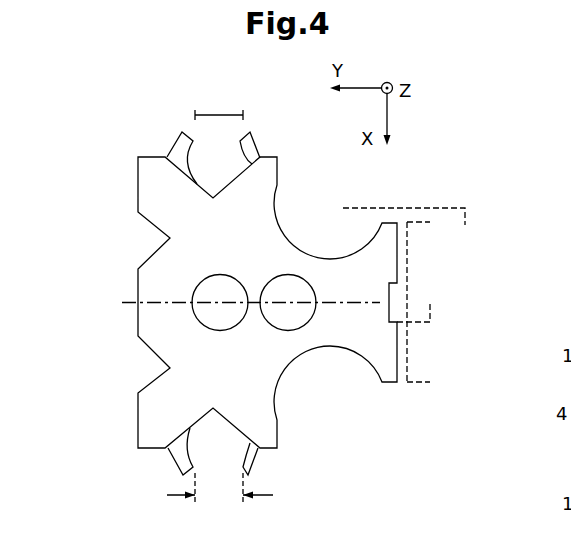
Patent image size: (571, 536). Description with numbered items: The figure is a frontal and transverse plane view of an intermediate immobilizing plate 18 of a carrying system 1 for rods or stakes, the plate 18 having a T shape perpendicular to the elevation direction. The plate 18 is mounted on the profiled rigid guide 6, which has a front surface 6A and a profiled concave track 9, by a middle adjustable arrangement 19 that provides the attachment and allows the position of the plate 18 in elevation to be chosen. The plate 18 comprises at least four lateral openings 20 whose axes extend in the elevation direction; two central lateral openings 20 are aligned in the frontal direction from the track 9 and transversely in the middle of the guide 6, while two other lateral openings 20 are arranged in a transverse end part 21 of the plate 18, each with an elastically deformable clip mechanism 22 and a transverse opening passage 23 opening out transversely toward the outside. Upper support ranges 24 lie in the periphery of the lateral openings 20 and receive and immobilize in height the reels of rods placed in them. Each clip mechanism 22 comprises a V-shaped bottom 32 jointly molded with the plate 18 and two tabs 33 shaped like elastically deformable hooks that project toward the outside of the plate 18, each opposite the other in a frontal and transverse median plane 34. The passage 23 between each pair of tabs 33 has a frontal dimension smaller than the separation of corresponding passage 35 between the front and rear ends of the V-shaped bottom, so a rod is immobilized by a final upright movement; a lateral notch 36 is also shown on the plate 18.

The carrying system 1 is at (450, 56).
The profiled rigid guide 6 is at (425, 383).
The front surface 6A is at (408, 298).
The profiled concave track 9 is at (432, 305).
The intermediate immobilizing plate 18 is at (136, 317).
The middle adjustable arrangement 19 is at (448, 207).
The lateral opening 20 is at (233, 315).
The transverse end part 21 is at (110, 154).
The elastically deformable clip mechanism 22 is at (136, 125).
The transverse opening passage 23 is at (227, 181).
The upper support range 24 is at (227, 236).
The bottom 32 is at (238, 178).
The tab 33 is at (262, 150).
The frontal and transverse median plane 34 is at (352, 302).
The separation of corresponding passage 35 is at (222, 112).
The lateral notch 36 is at (137, 195).